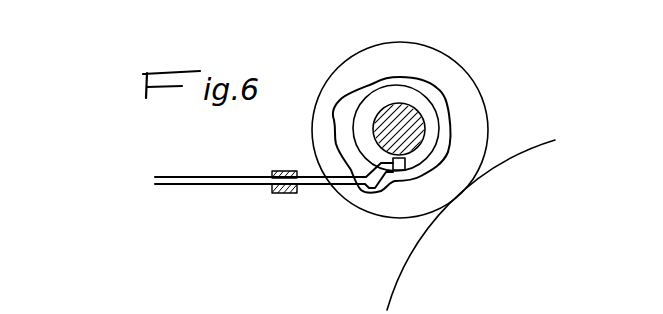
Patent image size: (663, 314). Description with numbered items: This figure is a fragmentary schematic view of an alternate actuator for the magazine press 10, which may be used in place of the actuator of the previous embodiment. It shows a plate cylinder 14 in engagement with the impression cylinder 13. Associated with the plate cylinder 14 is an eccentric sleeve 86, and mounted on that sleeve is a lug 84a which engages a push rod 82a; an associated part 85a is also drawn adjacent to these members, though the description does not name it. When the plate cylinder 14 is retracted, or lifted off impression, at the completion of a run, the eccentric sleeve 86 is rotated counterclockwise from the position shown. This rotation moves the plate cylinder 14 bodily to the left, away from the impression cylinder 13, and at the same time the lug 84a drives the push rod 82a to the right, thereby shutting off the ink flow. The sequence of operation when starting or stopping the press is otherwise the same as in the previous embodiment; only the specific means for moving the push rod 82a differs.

The plate cylinder 14 is at (421, 46).
The magazine press 10 is at (433, 92).
The eccentric sleeve 86 is at (387, 95).
The lug 84a is at (399, 170).
The push rod 82a is at (245, 176).
The insulating bushing 85a is at (286, 196).
The impression cylinder 13 is at (403, 268).